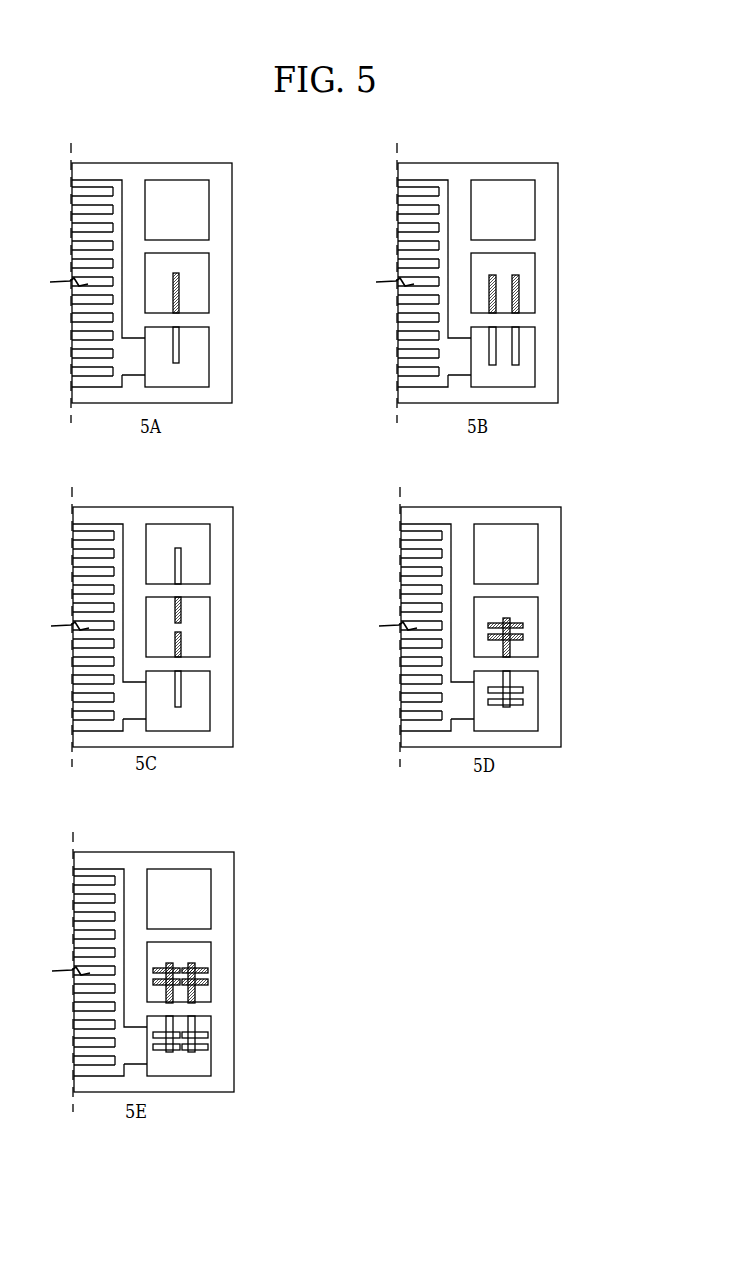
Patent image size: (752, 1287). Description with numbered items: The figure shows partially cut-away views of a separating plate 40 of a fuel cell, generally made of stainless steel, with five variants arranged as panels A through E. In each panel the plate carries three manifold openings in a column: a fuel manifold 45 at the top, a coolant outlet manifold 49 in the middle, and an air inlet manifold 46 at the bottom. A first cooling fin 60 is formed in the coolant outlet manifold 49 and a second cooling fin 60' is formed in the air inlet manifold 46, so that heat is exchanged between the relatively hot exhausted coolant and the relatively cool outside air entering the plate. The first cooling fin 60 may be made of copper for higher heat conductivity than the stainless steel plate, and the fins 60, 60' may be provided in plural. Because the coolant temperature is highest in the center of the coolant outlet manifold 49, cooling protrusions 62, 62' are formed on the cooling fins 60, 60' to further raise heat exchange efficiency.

The separating plate 40 is at (202, 163).
The fuel manifold 45 is at (192, 207).
The air inlet manifold 46 is at (191, 375).
The coolant outlet manifold 49 is at (190, 268).
The first cooling fin 60 is at (397, 637).
The second cooling fin 60' is at (396, 689).
The cooling protrusion 62 is at (386, 814).
The cooling protrusion 62' is at (387, 882).